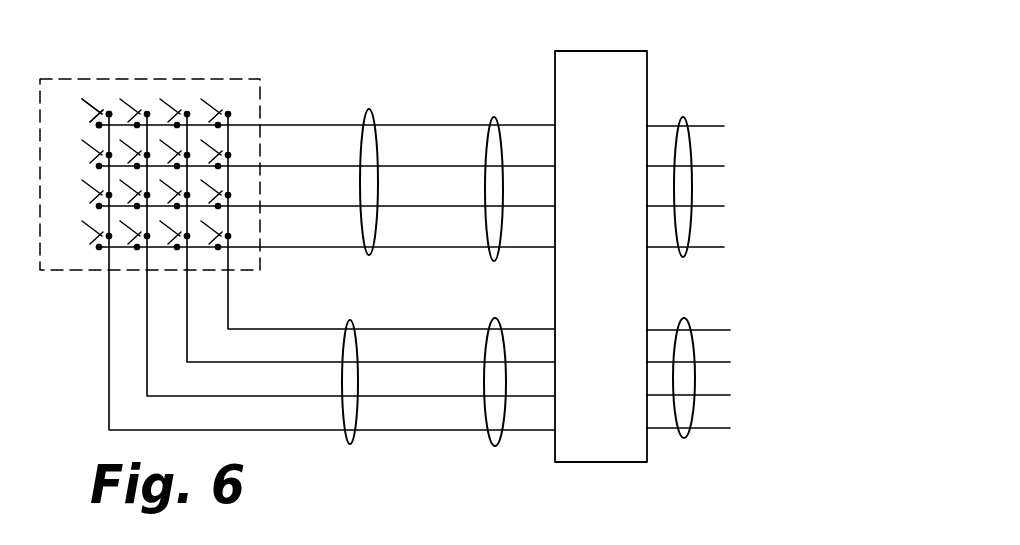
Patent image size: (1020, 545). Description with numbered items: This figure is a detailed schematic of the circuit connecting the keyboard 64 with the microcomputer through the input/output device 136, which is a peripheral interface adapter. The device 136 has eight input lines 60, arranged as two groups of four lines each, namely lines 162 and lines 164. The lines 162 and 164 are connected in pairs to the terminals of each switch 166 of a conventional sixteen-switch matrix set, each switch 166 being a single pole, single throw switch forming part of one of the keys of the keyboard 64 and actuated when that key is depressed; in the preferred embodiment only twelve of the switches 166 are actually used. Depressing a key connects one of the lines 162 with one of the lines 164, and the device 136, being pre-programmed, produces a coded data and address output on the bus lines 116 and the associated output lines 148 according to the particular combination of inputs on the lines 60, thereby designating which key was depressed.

The keyboard 64 is at (258, 80).
The switch 166 is at (96, 98).
The group of four input lines 162 is at (372, 110).
The input lines 60 is at (494, 261).
The input/output device 136 is at (626, 283).
The data and address bus lines 116 is at (684, 117).
The group of four input lines 164 is at (350, 444).
The output coupling coil 148 is at (687, 438).